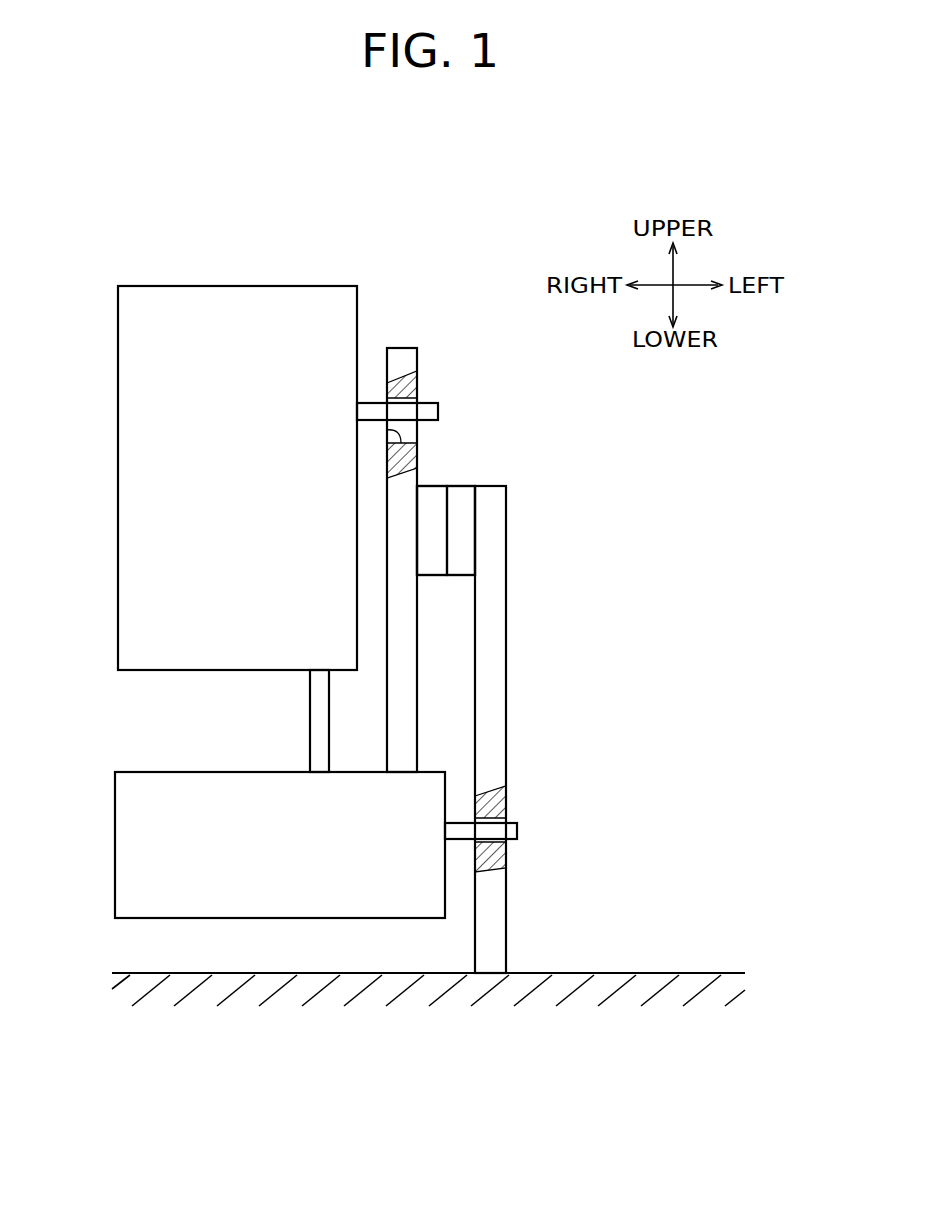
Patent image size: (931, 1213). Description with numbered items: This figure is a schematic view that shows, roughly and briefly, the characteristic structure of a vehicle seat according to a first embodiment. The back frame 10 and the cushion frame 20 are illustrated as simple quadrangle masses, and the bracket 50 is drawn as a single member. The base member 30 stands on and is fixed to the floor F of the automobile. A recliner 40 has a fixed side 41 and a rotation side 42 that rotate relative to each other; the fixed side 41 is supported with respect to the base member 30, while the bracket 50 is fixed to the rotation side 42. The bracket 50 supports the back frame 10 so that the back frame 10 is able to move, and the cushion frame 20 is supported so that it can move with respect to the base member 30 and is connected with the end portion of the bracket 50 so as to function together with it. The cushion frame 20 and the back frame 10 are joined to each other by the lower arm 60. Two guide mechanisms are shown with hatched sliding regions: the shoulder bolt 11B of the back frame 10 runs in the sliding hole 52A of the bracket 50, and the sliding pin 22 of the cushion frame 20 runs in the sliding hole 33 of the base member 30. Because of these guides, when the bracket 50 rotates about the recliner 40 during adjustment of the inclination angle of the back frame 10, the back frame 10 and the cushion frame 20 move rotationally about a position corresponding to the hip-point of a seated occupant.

The back frame 10 is at (241, 286).
The cushion frame 20 is at (151, 772).
The lower arm 60 is at (312, 716).
The bracket 50 is at (413, 630).
The shoulder bolt 11B is at (428, 403).
The sliding hole 52A is at (386, 430).
The recliner 40 is at (471, 484).
The rotation side 42 is at (432, 490).
The fixed side 41 is at (462, 523).
The base member 30 is at (503, 650).
The sliding hole 33 is at (506, 818).
The sliding pin 22 is at (518, 829).
The floor F is at (656, 983).